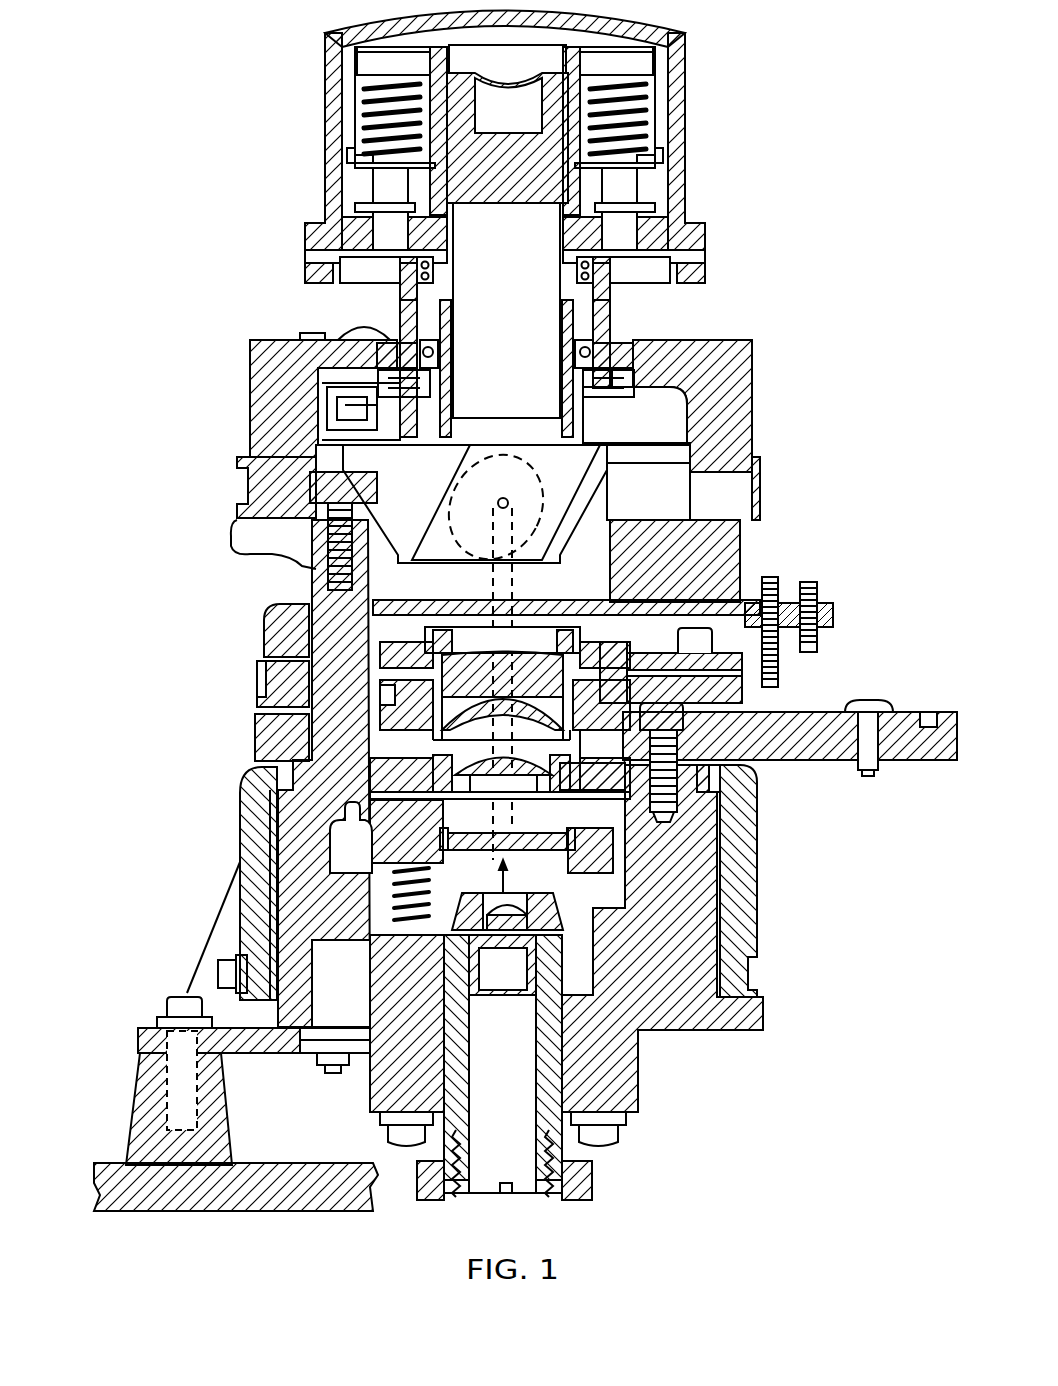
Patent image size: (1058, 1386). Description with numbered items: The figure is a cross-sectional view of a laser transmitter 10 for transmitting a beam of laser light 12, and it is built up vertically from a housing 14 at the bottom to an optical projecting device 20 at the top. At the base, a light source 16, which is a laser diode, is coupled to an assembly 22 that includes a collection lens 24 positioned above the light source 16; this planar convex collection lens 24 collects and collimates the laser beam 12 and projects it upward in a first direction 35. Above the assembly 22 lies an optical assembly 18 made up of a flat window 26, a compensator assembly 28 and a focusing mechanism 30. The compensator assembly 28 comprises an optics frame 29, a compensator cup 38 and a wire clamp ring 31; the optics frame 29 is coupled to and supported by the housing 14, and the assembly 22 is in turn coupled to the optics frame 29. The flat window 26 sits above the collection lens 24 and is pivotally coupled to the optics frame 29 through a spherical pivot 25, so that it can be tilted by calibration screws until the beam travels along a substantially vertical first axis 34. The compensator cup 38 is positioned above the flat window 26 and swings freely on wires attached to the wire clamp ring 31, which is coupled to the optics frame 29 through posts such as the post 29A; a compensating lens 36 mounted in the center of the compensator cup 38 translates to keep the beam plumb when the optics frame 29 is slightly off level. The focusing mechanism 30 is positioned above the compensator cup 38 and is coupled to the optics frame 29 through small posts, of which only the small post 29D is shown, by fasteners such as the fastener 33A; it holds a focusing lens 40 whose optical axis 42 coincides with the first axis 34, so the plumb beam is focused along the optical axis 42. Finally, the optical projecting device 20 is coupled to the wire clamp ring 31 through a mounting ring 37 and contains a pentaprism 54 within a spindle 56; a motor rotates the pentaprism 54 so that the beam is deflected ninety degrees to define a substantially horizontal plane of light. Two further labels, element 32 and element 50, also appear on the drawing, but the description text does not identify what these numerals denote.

The laser transmitter 10 is at (232, 560).
The beam of laser light 12 is at (515, 878).
The housing 14 is at (225, 1119).
The light source 16 is at (486, 965).
The optical assembly 18 is at (236, 690).
The optical projecting device 20 is at (246, 133).
The assembly 22 is at (592, 1182).
The collection lens 24 is at (515, 921).
The spherical pivot 25 is at (352, 850).
The flat window 26 is at (520, 830).
The compensator assembly 28 is at (220, 853).
The optics frame 29 is at (246, 1045).
The post 29A is at (295, 742).
The small post 29D is at (705, 888).
The focusing mechanism 30 is at (236, 639).
The wire clamp ring 31 is at (250, 490).
The lip 32 is at (222, 550).
The fastener 33A is at (682, 718).
The first axis 34 is at (490, 811).
The first direction 35 is at (498, 884).
The compensating lens 36 is at (548, 757).
The mounting ring 37 is at (252, 359).
The compensator cup 38 is at (242, 805).
The focusing lens 40 is at (386, 628).
The optical axis 42 is at (525, 610).
The mirror 50 is at (492, 504).
The pentaprism 54 is at (508, 145).
The spindle 56 is at (552, 313).